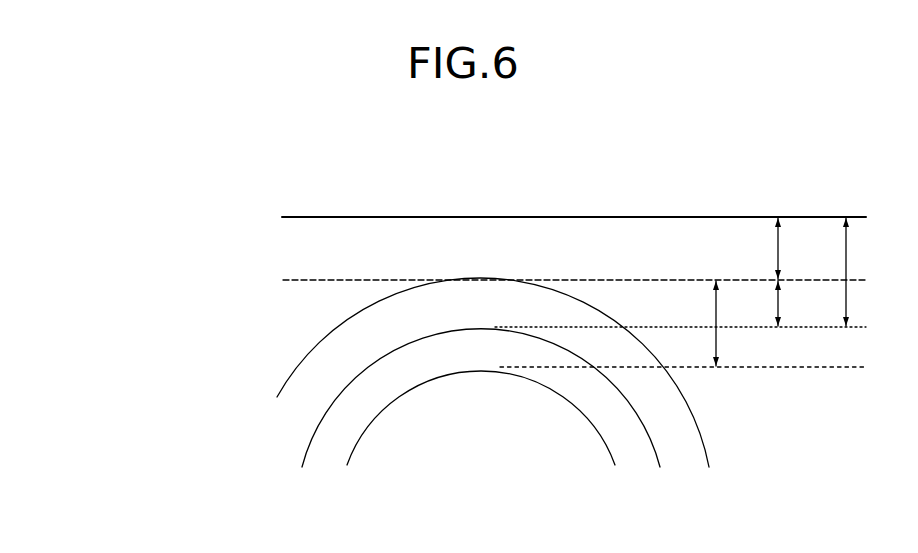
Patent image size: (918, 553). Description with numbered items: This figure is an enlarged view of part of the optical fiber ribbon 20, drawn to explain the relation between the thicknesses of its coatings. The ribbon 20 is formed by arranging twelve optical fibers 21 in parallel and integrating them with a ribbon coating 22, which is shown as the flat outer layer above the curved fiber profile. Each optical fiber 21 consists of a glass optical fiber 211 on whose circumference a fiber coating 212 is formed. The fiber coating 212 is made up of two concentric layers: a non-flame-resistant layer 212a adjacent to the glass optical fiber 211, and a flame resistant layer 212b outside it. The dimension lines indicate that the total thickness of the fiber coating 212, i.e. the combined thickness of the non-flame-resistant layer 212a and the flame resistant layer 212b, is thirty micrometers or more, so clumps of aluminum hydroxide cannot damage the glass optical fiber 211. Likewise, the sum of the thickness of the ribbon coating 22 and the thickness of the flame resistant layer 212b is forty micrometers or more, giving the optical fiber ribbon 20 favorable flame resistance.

The optical fiber ribbon 20 is at (471, 286).
The optical fiber 21 is at (383, 372).
The ribbon coating 22 is at (330, 237).
The glass optical fiber 211 is at (397, 448).
The fiber coating 212 is at (383, 372).
The non-flame-resistant layer 212a is at (348, 417).
The flame resistant layer 212b is at (304, 380).